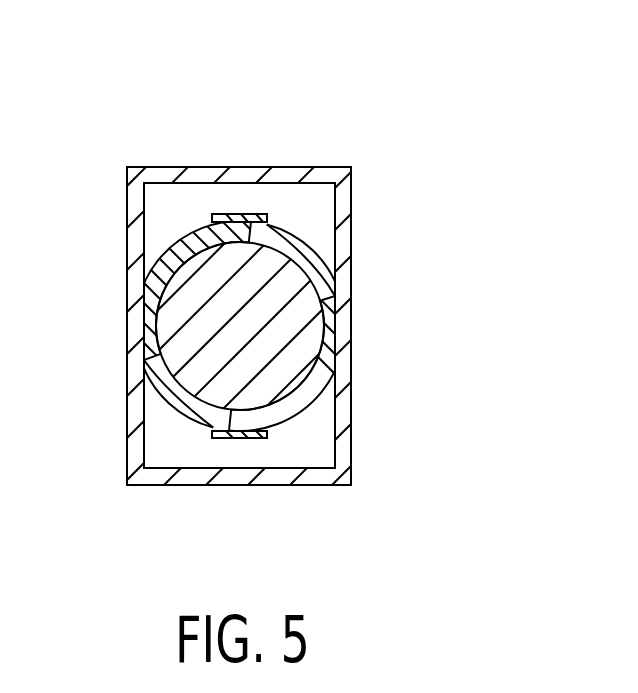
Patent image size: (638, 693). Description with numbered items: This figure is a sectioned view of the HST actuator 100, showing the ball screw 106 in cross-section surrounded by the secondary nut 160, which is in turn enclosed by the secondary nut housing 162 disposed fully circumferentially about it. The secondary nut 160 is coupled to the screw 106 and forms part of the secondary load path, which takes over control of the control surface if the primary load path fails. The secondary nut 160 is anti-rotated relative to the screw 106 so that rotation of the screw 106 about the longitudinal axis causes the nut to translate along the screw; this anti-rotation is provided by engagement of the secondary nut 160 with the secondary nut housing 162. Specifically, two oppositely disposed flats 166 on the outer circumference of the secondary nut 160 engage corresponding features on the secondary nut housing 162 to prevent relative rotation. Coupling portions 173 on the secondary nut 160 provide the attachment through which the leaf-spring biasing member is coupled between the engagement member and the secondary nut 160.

The HST actuator 100 is at (383, 95).
The ball screw 106 is at (175, 362).
The secondary nut 160 is at (325, 285).
The secondary nut housing 162 is at (352, 190).
The flats 166 is at (326, 352).
The coupling portion 173 is at (232, 213).